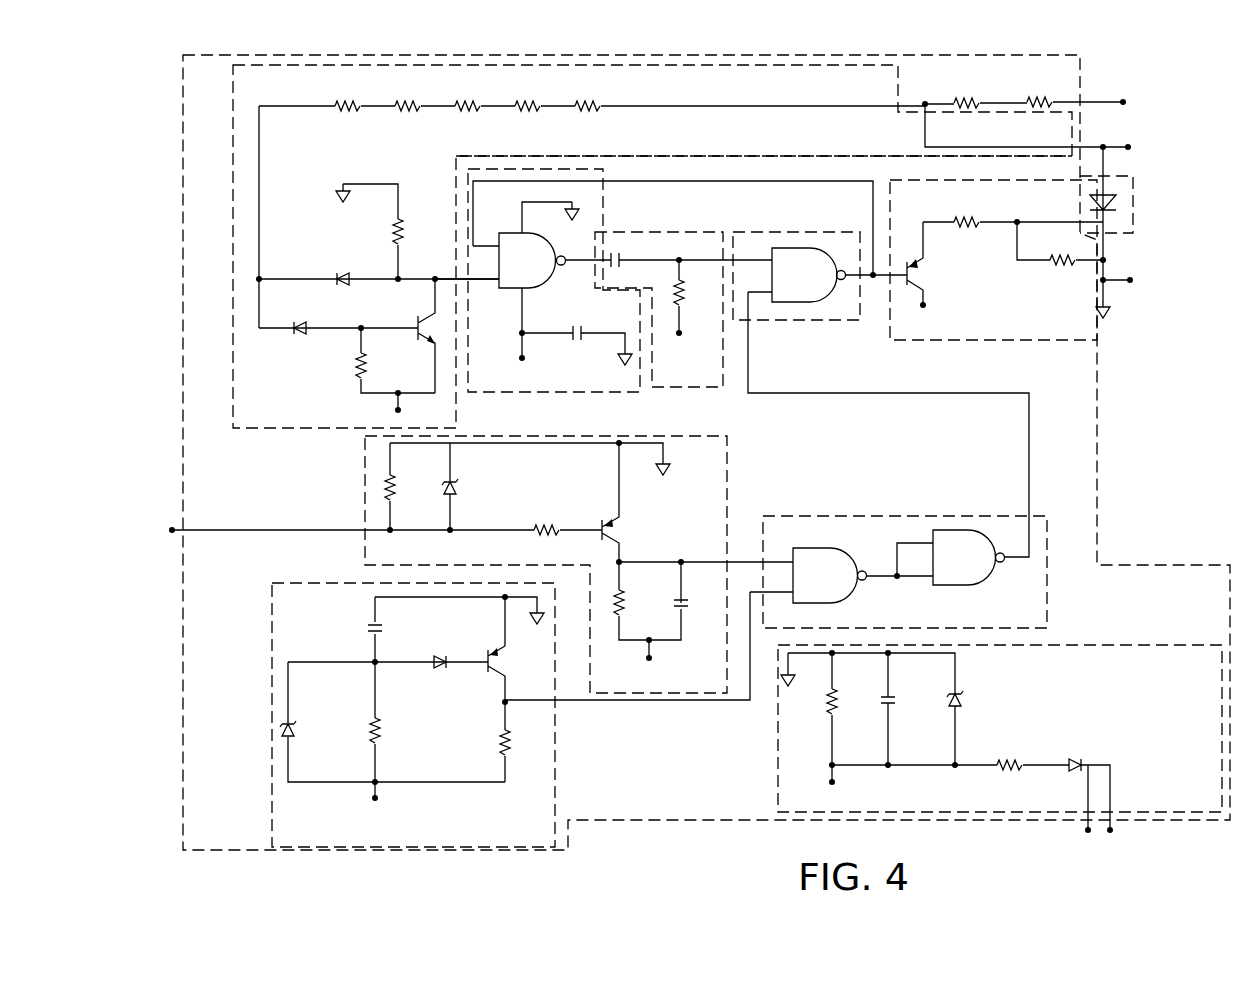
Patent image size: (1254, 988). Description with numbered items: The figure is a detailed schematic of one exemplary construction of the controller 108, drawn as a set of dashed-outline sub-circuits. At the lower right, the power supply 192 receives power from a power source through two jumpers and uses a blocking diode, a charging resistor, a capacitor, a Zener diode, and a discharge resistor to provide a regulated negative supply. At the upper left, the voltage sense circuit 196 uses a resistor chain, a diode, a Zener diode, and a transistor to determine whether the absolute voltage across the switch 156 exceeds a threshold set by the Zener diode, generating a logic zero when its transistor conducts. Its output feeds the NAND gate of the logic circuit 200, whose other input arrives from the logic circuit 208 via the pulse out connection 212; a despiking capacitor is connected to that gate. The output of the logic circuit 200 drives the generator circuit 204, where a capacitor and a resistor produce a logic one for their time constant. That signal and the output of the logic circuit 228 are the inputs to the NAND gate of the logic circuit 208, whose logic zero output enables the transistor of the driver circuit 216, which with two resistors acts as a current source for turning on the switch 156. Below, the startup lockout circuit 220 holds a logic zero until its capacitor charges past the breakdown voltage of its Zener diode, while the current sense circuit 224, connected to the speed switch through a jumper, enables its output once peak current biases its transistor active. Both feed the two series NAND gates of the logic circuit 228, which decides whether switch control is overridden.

The controller 108 is at (1105, 480).
The switch 156 is at (1135, 205).
The power supply 192 is at (1122, 645).
The voltage sense circuit 196 is at (237, 408).
The logic circuit 200 is at (604, 396).
The generator circuit 204 is at (668, 230).
The logic circuit 208 is at (813, 232).
The pulse out connection 212 is at (775, 178).
The driver circuit 216 is at (1040, 341).
The startup lockout circuit 220 is at (556, 780).
The current sense circuit 224 is at (728, 496).
The logic circuit 228 is at (1050, 620).